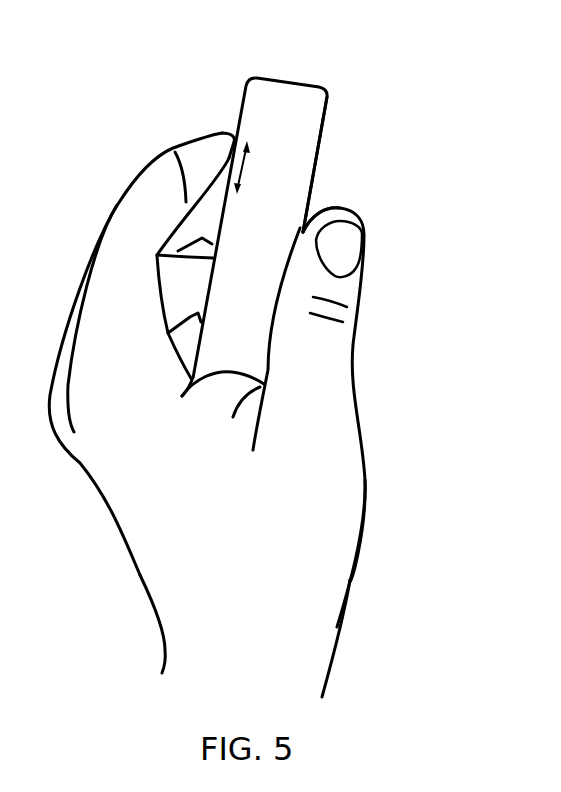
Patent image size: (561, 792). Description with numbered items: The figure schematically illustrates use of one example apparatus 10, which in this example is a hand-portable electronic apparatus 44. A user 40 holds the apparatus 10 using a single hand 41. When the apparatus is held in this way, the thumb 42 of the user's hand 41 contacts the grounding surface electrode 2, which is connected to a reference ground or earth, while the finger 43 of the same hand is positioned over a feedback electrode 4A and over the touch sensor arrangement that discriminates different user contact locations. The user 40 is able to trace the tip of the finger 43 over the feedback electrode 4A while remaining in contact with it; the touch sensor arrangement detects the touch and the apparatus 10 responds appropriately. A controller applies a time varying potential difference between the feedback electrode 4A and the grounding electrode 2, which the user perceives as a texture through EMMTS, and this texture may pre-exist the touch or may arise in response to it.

The apparatus 10 is at (307, 83).
The grounding electrode 2 is at (303, 231).
The feedback electrode 4A is at (233, 140).
The user 40 is at (410, 413).
The hand 41 is at (338, 632).
The thumb 42 is at (356, 320).
The finger 43 is at (174, 153).
The hand-portable electronic apparatus 44 is at (325, 150).